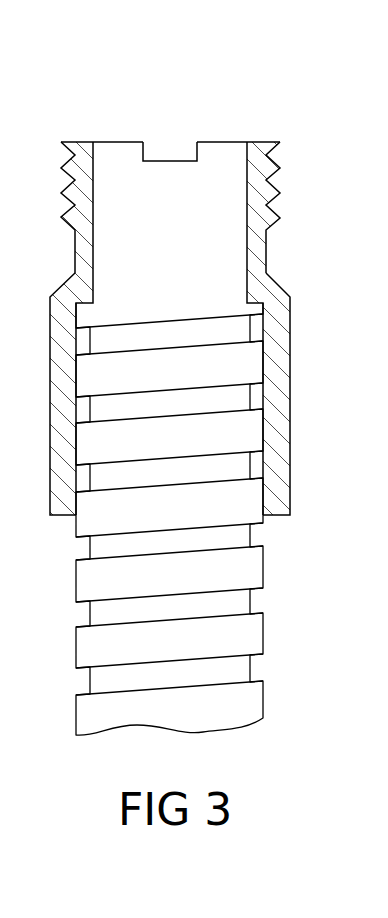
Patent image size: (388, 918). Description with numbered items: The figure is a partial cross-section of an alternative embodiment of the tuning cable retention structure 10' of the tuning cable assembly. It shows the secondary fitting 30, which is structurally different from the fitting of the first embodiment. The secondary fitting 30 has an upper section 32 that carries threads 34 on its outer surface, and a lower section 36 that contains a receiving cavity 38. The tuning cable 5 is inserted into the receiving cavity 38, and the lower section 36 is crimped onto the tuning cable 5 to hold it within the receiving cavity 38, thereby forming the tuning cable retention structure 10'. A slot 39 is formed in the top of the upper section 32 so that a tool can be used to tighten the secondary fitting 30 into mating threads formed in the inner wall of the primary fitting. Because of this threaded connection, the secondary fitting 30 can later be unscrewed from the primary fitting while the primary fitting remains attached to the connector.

The tuning cable retention structure 10' is at (194, 379).
The secondary fitting 30 is at (77, 140).
The upper section 32 is at (262, 250).
The threads 34 is at (280, 163).
The lower section 36 is at (286, 318).
The receiving cavity 38 is at (255, 395).
The slot 39 is at (172, 135).
The tuning cable 5 is at (250, 565).